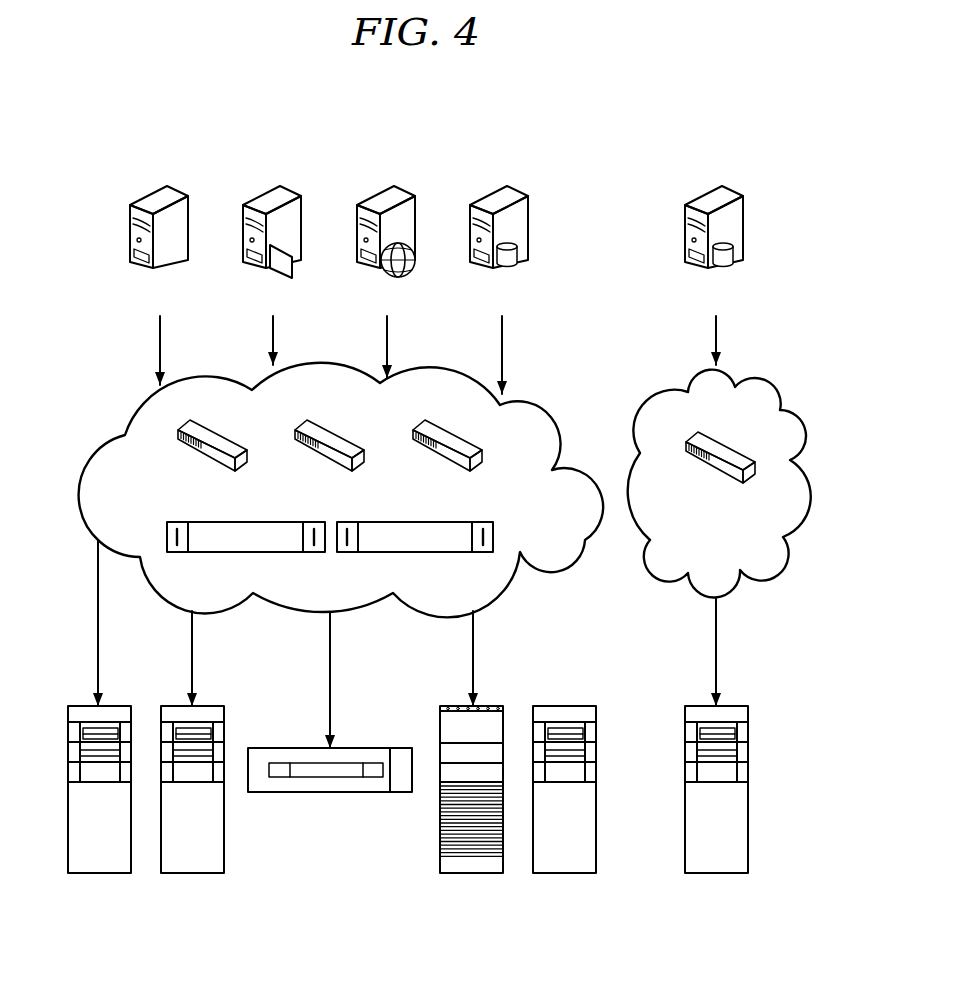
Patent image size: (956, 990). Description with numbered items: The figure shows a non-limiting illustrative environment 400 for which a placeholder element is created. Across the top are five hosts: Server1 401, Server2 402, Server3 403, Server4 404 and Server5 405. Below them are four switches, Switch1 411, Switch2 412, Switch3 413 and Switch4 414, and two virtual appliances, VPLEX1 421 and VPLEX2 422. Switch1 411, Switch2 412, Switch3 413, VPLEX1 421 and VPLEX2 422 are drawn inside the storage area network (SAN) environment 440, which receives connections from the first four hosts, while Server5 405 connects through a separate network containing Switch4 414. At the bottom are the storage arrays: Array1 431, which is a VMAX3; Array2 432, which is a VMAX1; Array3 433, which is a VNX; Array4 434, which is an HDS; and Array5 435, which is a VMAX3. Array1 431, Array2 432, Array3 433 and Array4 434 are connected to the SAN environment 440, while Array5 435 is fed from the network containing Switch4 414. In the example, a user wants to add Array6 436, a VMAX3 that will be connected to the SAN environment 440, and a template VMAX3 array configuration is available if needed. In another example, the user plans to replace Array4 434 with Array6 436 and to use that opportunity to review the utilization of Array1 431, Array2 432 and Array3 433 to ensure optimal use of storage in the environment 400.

The environment 400 is at (433, 88).
The Server1 401 is at (182, 194).
The Server2 402 is at (295, 194).
The Server3 403 is at (408, 194).
The Server4 404 is at (522, 194).
The Server5 405 is at (737, 194).
The Switch1 411 is at (212, 431).
The Switch2 412 is at (330, 431).
The Switch3 413 is at (445, 434).
The Switch4 414 is at (718, 446).
The VPLEX1 421 is at (166, 535).
The VPLEX2 422 is at (494, 535).
The Array1 431 is at (110, 705).
The Array2 432 is at (203, 705).
The Array3 433 is at (355, 747).
The Array4 434 is at (482, 705).
The Array5 435 is at (726, 705).
The Array6 436 is at (575, 705).
The storage area network (SAN) environment 440 is at (124, 434).